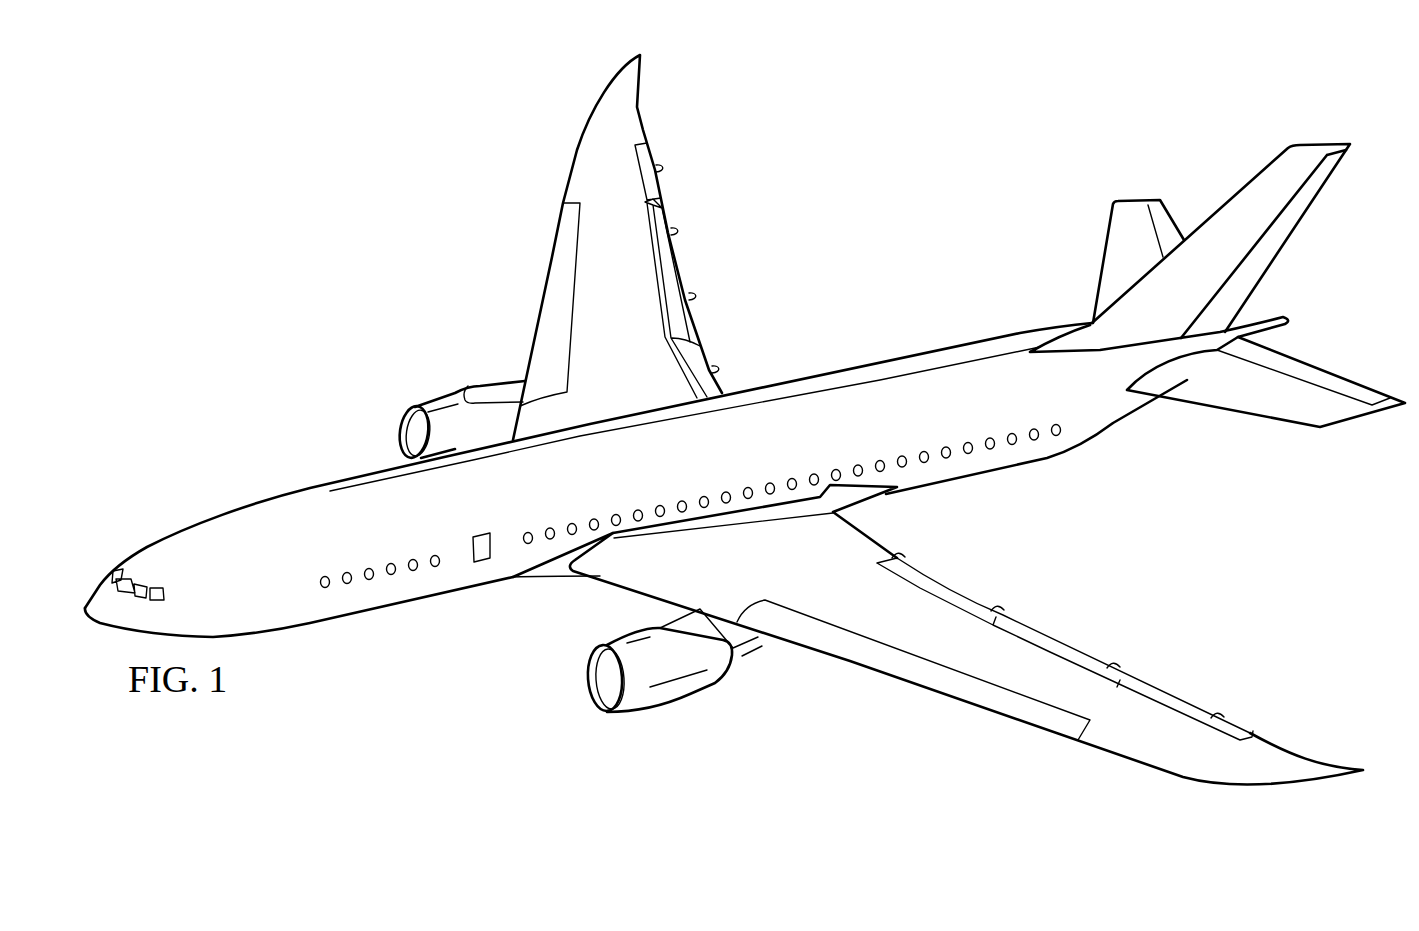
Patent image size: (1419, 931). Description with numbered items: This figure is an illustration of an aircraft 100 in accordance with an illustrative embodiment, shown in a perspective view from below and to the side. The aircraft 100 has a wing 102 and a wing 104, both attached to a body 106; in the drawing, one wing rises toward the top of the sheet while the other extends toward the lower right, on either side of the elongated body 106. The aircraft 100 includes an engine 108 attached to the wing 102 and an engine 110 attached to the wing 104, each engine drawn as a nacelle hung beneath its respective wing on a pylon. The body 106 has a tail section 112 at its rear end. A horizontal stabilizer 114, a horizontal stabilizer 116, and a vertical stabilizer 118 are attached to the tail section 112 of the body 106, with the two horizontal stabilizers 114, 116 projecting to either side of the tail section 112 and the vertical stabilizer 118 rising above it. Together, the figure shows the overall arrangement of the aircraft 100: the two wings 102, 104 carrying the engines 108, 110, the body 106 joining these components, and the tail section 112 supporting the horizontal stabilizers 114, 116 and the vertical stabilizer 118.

The aircraft 100 is at (320, 115).
The wing 102 is at (638, 92).
The wing 104 is at (1213, 780).
The body 106 is at (262, 497).
The engine 108 is at (442, 393).
The engine 110 is at (677, 703).
The tail section 112 is at (1172, 450).
The horizontal stabilizer 114 is at (1103, 258).
The horizontal stabilizer 116 is at (1268, 418).
The vertical stabilizer 118 is at (1297, 228).